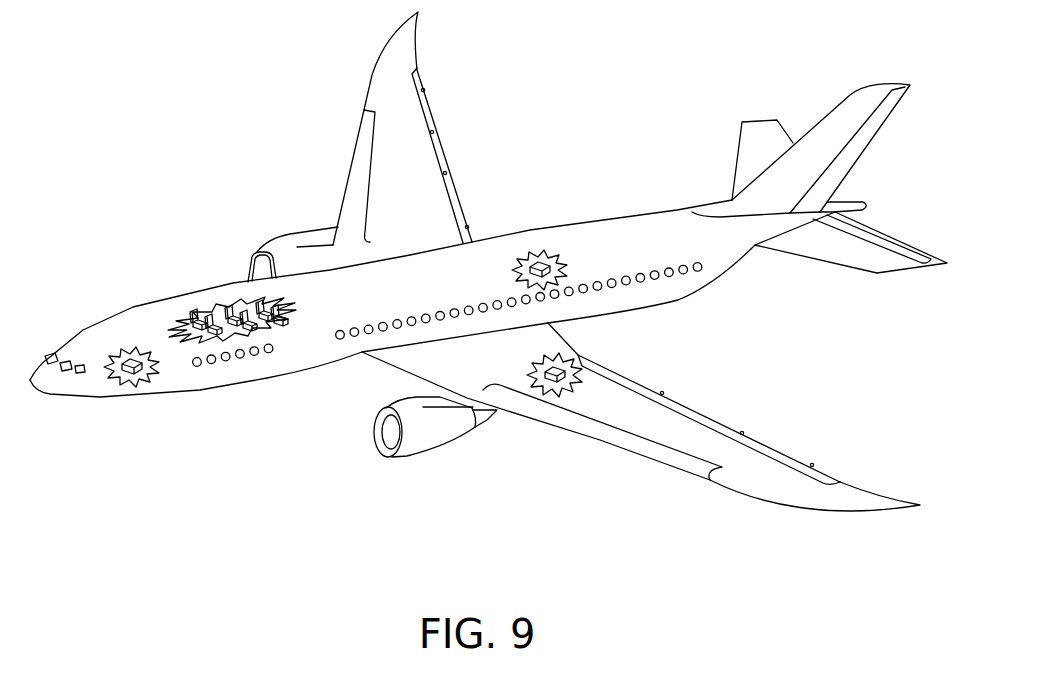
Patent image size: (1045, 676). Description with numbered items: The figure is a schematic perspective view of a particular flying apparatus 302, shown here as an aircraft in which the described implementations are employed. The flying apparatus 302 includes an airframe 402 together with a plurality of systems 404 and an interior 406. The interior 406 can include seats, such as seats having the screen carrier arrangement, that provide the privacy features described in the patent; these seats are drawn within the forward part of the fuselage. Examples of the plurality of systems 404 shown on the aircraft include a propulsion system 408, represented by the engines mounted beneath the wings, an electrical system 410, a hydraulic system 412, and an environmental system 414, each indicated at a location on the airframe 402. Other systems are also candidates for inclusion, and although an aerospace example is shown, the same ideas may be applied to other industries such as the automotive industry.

The flying apparatus 302 is at (160, 78).
The airframe 402 is at (302, 418).
The plurality of systems 404 is at (623, 185).
The interior 406 is at (200, 312).
The propulsion system 408 is at (280, 248).
The electrical system 410 is at (137, 347).
The hydraulic system 412 is at (563, 362).
The environmental system 414 is at (543, 253).